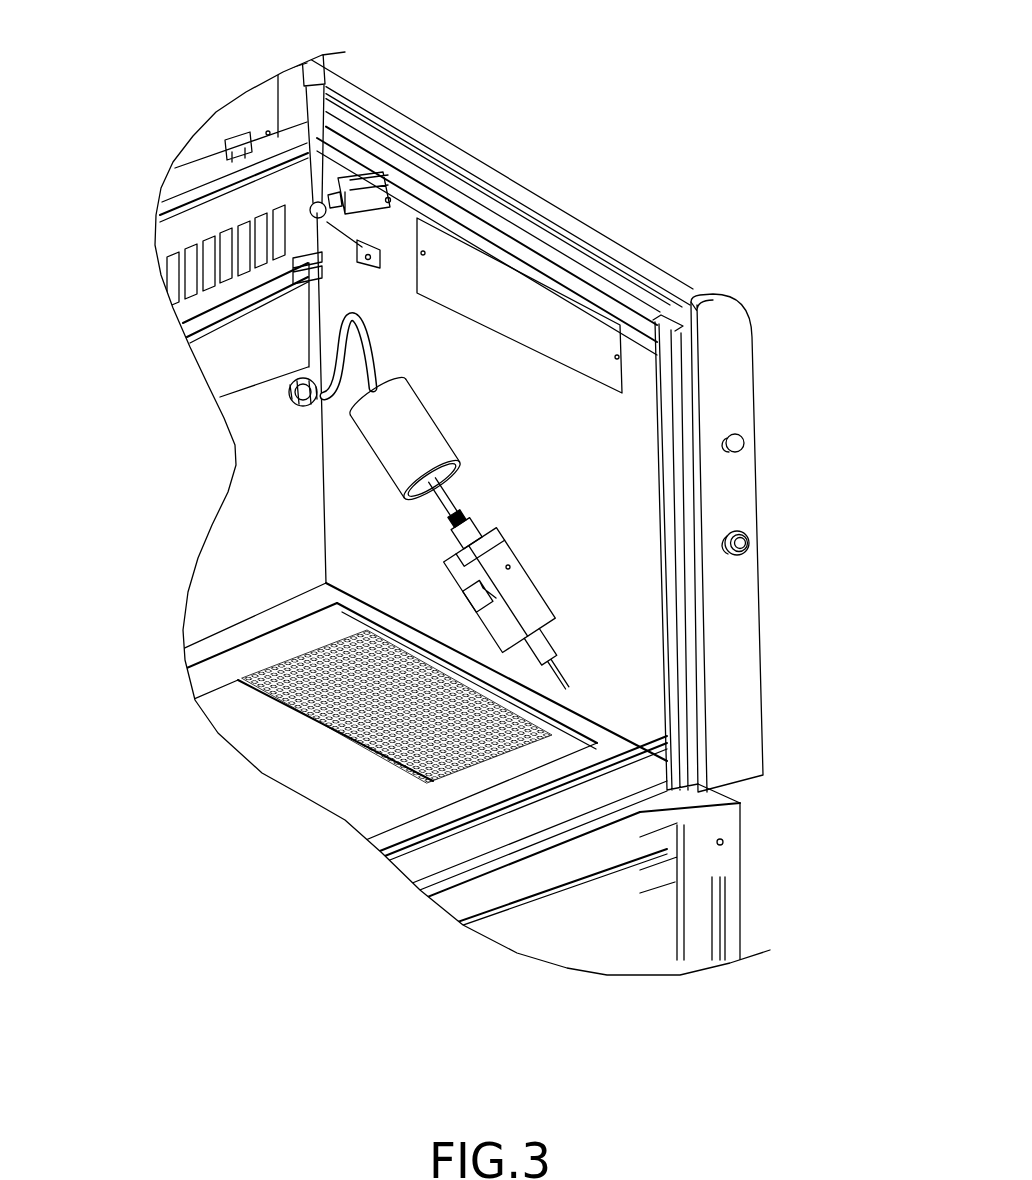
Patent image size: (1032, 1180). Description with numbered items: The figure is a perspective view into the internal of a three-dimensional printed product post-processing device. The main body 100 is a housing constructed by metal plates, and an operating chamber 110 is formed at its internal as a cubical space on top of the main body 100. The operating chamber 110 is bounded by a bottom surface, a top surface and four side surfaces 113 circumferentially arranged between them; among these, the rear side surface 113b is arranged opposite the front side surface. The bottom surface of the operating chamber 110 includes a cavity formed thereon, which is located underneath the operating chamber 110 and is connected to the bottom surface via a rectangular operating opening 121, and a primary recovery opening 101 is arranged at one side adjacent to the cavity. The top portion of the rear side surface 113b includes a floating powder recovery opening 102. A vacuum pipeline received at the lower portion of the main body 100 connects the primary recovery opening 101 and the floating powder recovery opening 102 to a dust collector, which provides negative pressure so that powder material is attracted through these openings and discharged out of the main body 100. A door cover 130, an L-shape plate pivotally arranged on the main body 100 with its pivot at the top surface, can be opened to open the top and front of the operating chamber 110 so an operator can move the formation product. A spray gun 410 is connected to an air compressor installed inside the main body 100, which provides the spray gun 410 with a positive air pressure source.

The main body 100 is at (765, 645).
The operating chamber 110 is at (625, 445).
The door cover 130 is at (338, 72).
The side surfaces 113 is at (553, 403).
The rear side surface 113b is at (270, 447).
The floating powder recovery opening 102 is at (203, 277).
The spray gun 410 is at (418, 432).
The operating opening 121 is at (352, 733).
The primary recovery opening 101 is at (343, 705).